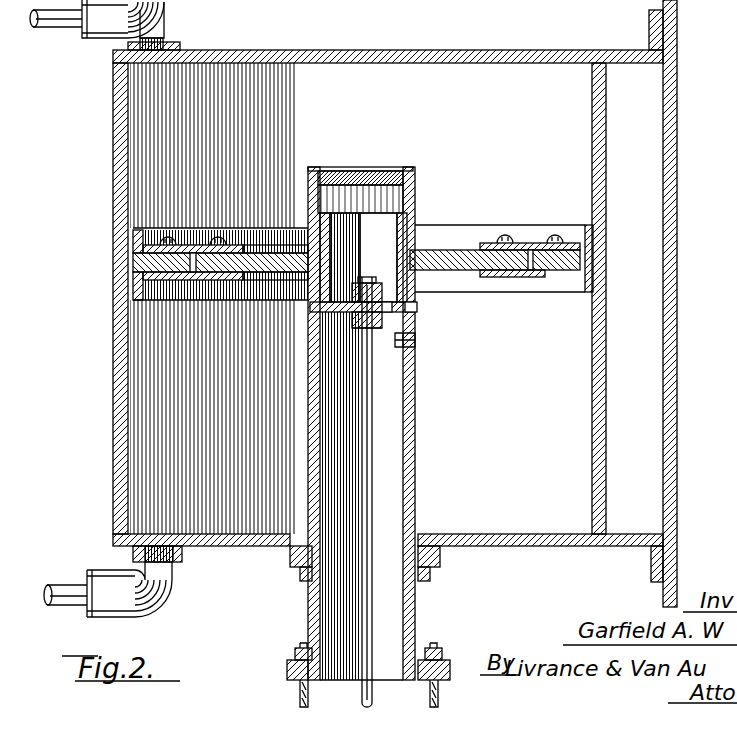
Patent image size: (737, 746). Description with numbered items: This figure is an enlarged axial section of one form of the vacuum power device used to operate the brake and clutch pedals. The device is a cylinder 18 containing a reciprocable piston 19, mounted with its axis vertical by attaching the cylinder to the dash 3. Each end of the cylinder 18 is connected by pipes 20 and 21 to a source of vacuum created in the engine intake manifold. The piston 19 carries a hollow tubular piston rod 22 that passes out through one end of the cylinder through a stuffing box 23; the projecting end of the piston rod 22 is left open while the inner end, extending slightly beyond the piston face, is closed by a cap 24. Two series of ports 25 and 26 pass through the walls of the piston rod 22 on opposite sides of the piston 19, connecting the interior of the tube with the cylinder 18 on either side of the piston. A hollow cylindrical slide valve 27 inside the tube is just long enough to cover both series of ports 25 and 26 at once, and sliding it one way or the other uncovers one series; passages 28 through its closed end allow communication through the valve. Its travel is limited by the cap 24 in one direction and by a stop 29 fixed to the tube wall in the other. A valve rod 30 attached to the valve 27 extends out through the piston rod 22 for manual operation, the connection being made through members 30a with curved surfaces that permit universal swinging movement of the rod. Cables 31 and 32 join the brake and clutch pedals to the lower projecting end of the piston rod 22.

The dash 3 is at (672, 181).
The cylinder 18 is at (118, 156).
The piston 19 is at (253, 246).
The pipe 20 is at (48, 15).
The pipe 21 is at (72, 586).
The tubular piston rod 22 is at (415, 441).
The stuffing box 23 is at (302, 584).
The cap 24 is at (372, 171).
The ports 25 is at (413, 219).
The ports 26 is at (416, 306).
The cylindrical slide valve 27 is at (378, 257).
The passages 28 is at (388, 301).
The stop 29 is at (405, 346).
The valve rod 30 is at (366, 383).
The members with curved surfaces 30a is at (355, 284).
The cable 31 is at (438, 700).
The cable 32 is at (300, 697).